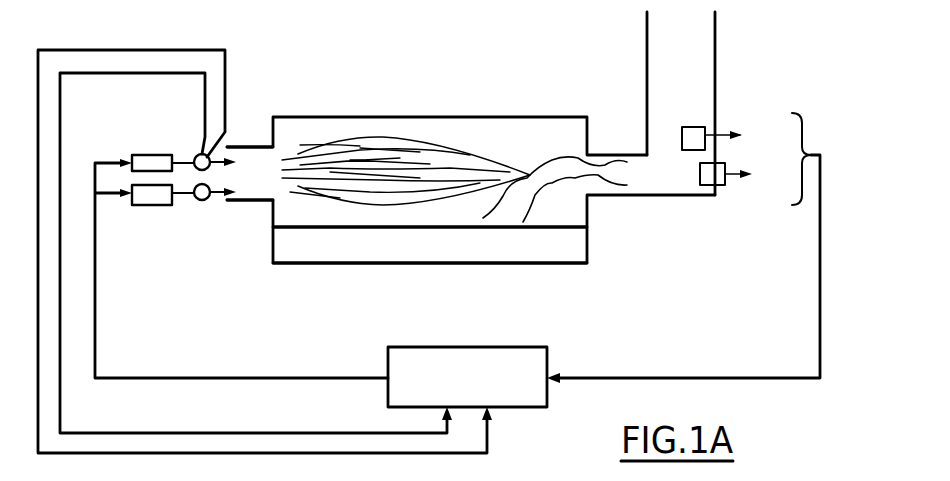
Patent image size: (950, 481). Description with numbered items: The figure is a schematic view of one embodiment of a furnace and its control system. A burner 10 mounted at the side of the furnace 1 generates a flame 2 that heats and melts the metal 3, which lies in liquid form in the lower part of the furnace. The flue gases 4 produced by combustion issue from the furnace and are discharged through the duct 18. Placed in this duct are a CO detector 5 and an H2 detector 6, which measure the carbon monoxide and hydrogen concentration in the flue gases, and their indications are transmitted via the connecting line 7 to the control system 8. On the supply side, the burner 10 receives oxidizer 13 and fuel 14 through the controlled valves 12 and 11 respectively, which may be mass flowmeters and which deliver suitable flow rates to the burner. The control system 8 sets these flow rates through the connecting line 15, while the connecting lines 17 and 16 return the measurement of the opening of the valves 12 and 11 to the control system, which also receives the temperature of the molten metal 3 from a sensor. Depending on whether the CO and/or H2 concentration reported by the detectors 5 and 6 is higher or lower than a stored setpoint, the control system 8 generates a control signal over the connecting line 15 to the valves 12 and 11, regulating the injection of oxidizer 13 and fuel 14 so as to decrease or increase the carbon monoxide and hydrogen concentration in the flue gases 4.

The furnace 1 is at (471, 117).
The flame 2 is at (445, 177).
The metal 3 is at (533, 246).
The flue gases 4 is at (603, 172).
The CO detector 5 is at (692, 127).
The H2 detector 6 is at (700, 173).
The connecting line 7 is at (820, 294).
The control system 8 is at (462, 347).
The burner 10 is at (253, 145).
The controlled valve 11 is at (203, 200).
The controlled valve 12 is at (200, 154).
The oxidizer 13 is at (152, 155).
The fuel 14 is at (157, 205).
The connecting line 15 is at (95, 310).
The connecting line 16 is at (123, 50).
The connecting line 17 is at (114, 73).
The duct 18 is at (647, 68).